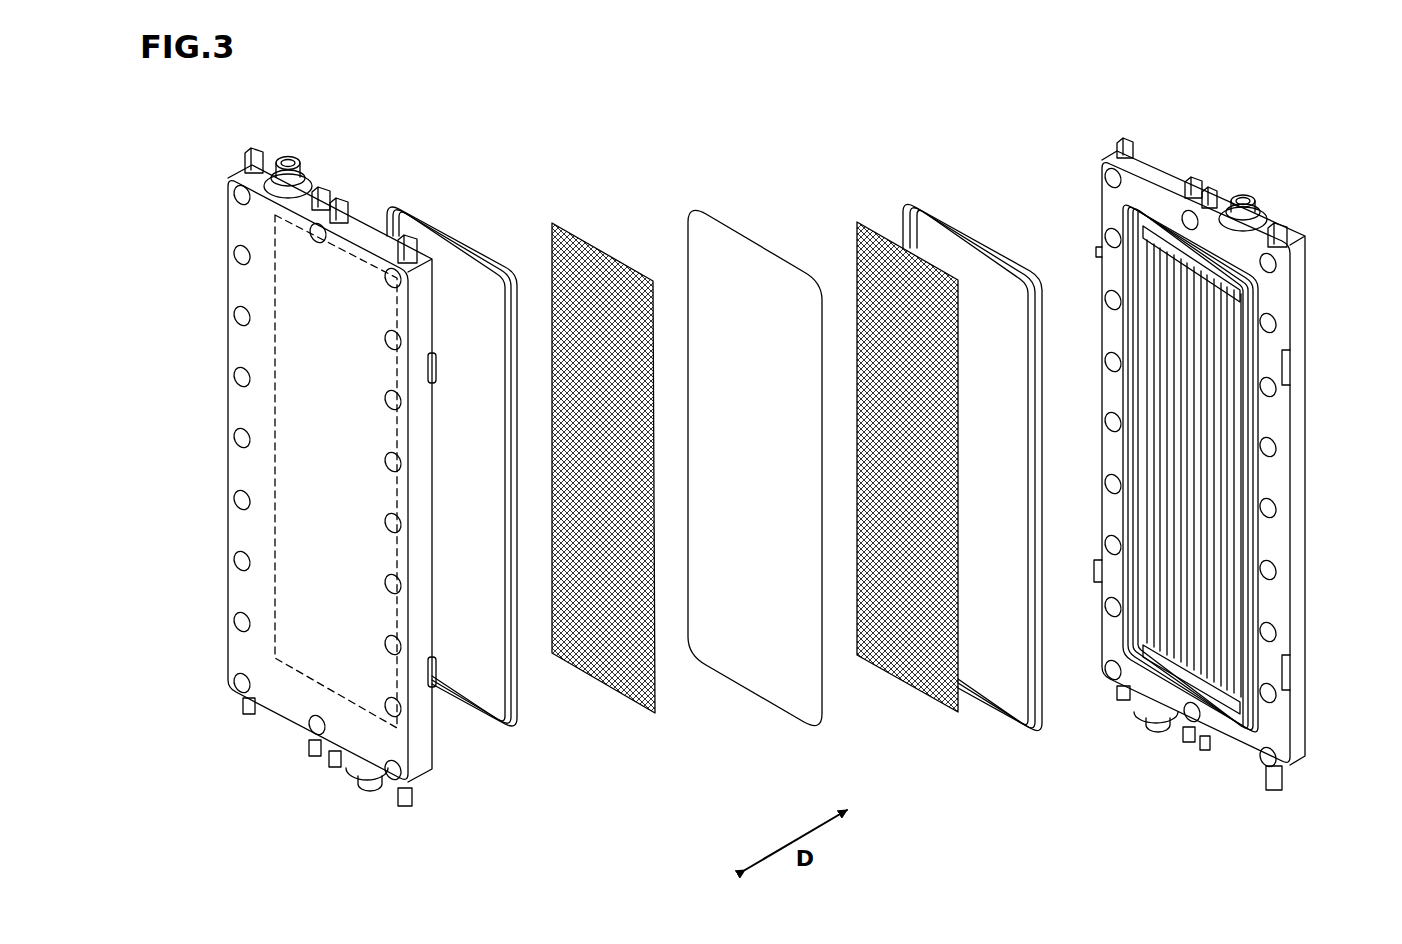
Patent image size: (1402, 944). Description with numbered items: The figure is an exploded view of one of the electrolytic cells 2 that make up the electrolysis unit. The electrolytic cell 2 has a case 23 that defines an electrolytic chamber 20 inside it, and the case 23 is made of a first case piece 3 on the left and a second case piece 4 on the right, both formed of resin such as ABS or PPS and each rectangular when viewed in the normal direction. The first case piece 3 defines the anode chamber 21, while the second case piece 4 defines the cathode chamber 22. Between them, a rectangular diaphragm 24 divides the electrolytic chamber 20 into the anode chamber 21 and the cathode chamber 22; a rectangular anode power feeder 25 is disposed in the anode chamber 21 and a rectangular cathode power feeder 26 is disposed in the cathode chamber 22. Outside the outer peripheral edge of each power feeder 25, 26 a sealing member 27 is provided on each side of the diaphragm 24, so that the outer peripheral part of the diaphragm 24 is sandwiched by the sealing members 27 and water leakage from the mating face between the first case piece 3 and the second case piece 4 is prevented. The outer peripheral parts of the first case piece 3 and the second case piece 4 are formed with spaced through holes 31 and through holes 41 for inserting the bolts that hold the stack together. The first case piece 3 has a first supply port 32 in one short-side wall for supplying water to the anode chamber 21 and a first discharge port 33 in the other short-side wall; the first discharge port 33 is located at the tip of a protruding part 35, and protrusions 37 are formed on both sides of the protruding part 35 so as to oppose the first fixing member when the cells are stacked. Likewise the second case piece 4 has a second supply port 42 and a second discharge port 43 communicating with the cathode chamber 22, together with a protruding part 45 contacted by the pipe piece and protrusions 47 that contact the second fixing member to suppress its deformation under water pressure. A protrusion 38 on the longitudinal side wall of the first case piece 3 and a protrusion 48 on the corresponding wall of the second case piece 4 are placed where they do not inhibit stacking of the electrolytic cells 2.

The electrolytic cell 2 is at (1314, 122).
The first case piece 3 is at (250, 407).
The second case piece 4 is at (1300, 490).
The electrolytic chamber 20 is at (1167, 288).
The anode chamber 21 is at (333, 300).
The cathode chamber 22 is at (1175, 612).
The case 23 is at (282, 693).
The diaphragm 24 is at (755, 657).
The anode power feeder 25 is at (610, 660).
The cathode power feeder 26 is at (908, 648).
The sealing member 27 is at (517, 683).
The through holes 31 is at (240, 562).
The first supply port 32 is at (373, 790).
The first discharge port 33 is at (287, 163).
The protruding part 35 is at (312, 170).
The protrusions 37 is at (245, 158).
The protrusion 38 is at (433, 368).
The through holes 41 is at (1115, 242).
The second supply port 42 is at (1157, 735).
The second discharge port 43 is at (1243, 200).
The protruding part 45 is at (1268, 213).
The protrusion 47 is at (1125, 140).
The protrusion 48 is at (1290, 672).